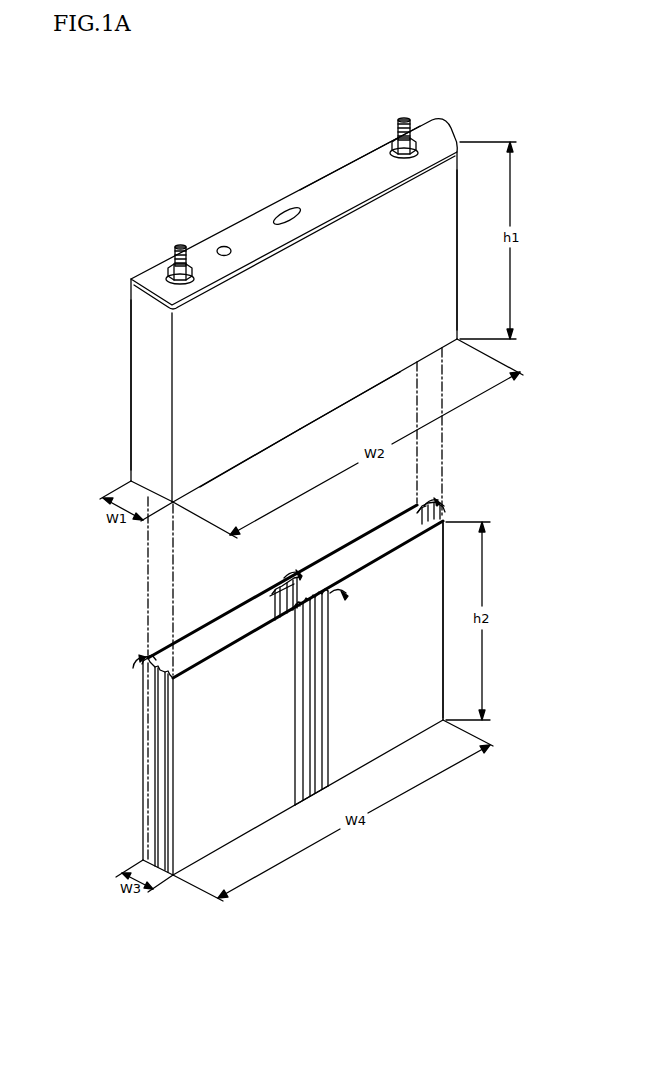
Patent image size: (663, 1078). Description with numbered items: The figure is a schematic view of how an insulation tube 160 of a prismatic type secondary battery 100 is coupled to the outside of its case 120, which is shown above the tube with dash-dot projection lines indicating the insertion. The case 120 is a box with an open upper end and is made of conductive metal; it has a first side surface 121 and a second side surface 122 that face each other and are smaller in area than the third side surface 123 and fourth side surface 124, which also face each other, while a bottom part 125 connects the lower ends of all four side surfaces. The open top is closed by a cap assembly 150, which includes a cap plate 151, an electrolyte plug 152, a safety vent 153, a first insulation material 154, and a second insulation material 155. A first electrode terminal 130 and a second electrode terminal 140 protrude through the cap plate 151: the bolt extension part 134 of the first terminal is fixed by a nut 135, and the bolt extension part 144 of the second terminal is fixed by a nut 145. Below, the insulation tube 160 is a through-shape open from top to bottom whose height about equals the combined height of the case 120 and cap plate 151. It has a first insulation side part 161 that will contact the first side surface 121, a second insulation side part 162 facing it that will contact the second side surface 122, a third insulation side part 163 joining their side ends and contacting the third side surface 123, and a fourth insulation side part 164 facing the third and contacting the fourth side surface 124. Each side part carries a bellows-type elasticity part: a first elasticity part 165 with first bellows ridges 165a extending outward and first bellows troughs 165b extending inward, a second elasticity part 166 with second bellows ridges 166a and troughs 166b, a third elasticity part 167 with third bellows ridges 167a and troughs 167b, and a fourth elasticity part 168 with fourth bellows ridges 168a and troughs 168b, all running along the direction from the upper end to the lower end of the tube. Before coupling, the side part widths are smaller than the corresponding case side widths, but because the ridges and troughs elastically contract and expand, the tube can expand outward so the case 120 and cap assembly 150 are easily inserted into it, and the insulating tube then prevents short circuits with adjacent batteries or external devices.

The prismatic type secondary battery 100 is at (118, 114).
The case 120 is at (128, 373).
The first side surface 121 is at (137, 418).
The second side surface 122 is at (457, 200).
The third side surface 123 is at (362, 385).
The fourth side surface 124 is at (128, 322).
The bottom part 125 is at (260, 457).
The first electrode terminal 130 is at (147, 245).
The bolt extension part 134 is at (178, 244).
The nut 135 is at (170, 257).
The first insulation material 154 is at (168, 277).
The second electrode terminal 140 is at (417, 120).
The bolt extension part 144 is at (401, 118).
The nut 145 is at (411, 137).
The second insulation material 155 is at (416, 146).
The cap assembly 150 is at (245, 207).
The cap plate 151 is at (333, 177).
The electrolyte plug 152 is at (223, 246).
The safety vent 153 is at (286, 211).
The insulation tube 160 is at (290, 692).
The first insulation side part 161 is at (143, 803).
The second insulation side part 162 is at (447, 515).
The third insulation side part 163 is at (252, 823).
The fourth insulation side part 164 is at (217, 628).
The first elasticity part 165 is at (153, 875).
The first bellows ridge 165a is at (146, 708).
The first bellows trough 165b is at (150, 666).
The second elasticity part 166 is at (442, 497).
The second bellows ridge 166a is at (444, 511).
The second bellows trough 166b is at (420, 509).
The third elasticity part 167 is at (333, 783).
The third bellows ridge 167a is at (313, 607).
The third bellows trough 167b is at (285, 613).
The fourth elasticity part 168 is at (282, 570).
The fourth bellows ridge 168a is at (275, 592).
The fourth bellows trough 168b is at (278, 584).